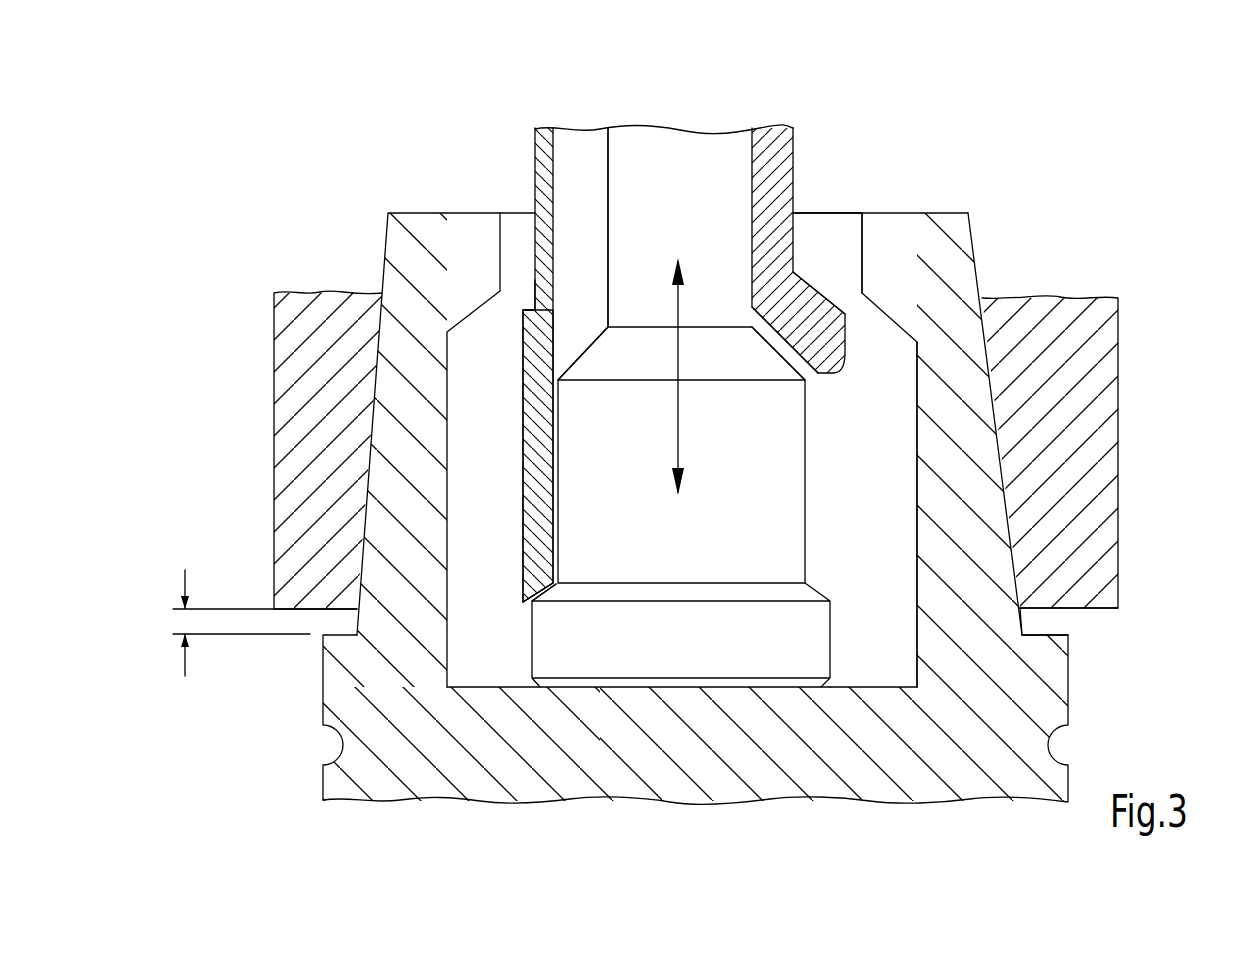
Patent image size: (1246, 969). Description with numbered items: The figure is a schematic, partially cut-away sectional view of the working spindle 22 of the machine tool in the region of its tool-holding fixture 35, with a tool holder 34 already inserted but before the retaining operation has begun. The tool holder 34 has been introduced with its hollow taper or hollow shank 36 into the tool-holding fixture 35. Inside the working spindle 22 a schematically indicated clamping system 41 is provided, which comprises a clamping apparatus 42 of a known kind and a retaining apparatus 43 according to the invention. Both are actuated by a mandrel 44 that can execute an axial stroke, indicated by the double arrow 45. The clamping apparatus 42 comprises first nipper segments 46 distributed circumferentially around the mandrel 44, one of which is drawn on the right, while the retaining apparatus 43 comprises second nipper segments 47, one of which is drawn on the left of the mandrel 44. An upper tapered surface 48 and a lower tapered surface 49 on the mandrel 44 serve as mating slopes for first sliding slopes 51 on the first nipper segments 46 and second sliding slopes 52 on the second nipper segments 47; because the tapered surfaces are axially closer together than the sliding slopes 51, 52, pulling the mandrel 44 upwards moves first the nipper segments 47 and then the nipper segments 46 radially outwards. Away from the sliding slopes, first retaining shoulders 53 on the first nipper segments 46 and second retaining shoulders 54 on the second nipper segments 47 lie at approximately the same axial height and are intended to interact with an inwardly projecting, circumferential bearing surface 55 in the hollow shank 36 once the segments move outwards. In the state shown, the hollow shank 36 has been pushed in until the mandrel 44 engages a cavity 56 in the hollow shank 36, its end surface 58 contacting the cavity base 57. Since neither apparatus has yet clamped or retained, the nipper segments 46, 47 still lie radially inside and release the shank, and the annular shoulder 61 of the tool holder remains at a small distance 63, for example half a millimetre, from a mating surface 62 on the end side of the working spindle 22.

The working spindle 22 is at (1046, 308).
The tool holder 34 is at (1041, 699).
The tool-holding fixture 35 is at (1003, 405).
The hollow shank 36 is at (953, 259).
The clamping system 41 is at (887, 163).
The clamping apparatus 42 is at (812, 232).
The retaining apparatus 43 is at (517, 187).
The mandrel 44 is at (768, 542).
The double arrow 45 is at (680, 413).
The first nipper segments 46 is at (812, 323).
The second nipper segments 47 is at (540, 467).
The upper tapered surface 48 is at (584, 336).
The lower tapered surface 49 is at (828, 607).
The first sliding slopes 51 is at (792, 378).
The second sliding slopes 52 is at (547, 591).
The first retaining shoulders 53 is at (817, 293).
The second retaining shoulders 54 is at (528, 313).
The bearing surface 55 is at (474, 306).
The cavity 56 is at (887, 547).
The cavity base 57 is at (856, 696).
The end surface 58 is at (588, 689).
The annular shoulder 61 is at (1045, 636).
The mating surface 62 is at (1100, 606).
The distance 63 is at (183, 585).